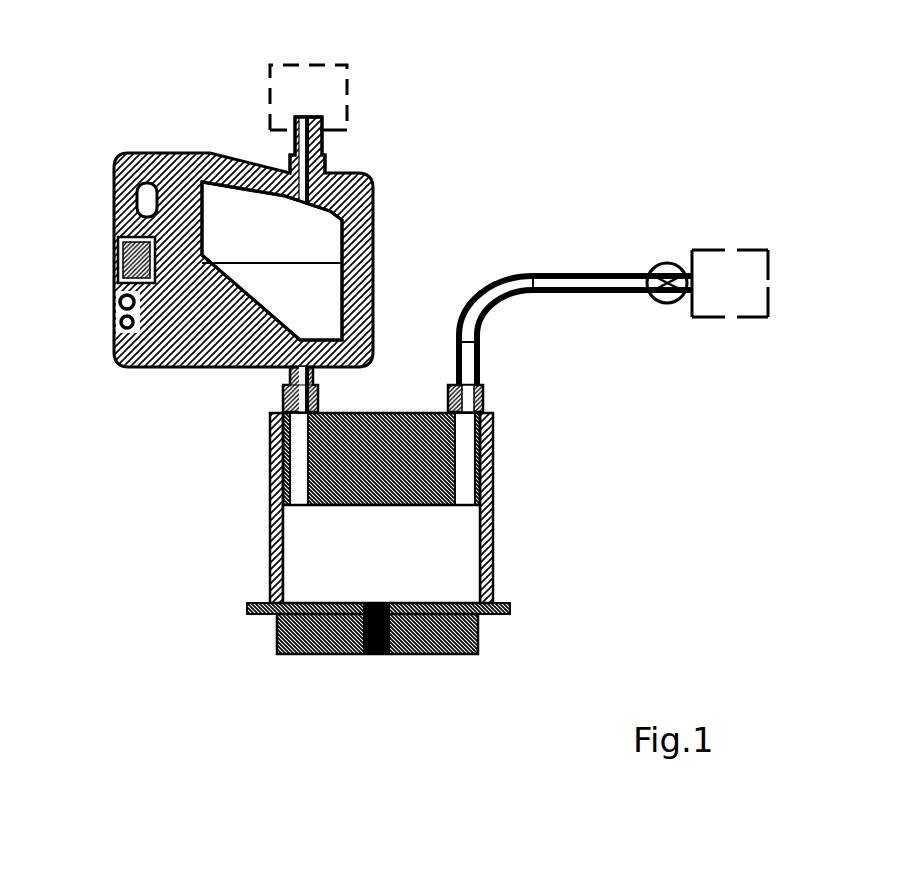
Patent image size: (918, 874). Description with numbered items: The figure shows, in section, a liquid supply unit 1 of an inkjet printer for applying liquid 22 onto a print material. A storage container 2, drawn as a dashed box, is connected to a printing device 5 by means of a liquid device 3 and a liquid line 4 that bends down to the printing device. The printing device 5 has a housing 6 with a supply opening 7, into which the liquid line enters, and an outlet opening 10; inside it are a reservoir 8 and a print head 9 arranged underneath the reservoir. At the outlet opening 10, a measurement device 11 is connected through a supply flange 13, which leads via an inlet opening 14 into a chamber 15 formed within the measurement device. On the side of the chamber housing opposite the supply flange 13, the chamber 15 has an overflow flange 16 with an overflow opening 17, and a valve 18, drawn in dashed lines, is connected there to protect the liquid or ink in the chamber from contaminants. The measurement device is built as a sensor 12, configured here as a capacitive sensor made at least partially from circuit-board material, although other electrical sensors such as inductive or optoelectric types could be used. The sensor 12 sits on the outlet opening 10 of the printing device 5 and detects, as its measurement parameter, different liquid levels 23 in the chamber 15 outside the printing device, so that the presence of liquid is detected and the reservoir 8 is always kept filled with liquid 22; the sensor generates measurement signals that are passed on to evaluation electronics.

The liquid supply unit 1 is at (603, 136).
The storage container 2 is at (733, 262).
The liquid device 3 is at (665, 265).
The liquid line 4 is at (533, 273).
The printing device 5 is at (417, 473).
The housing 6 is at (492, 567).
The supply opening 7 is at (468, 392).
The reservoir 8 is at (303, 550).
The print head 9 is at (332, 655).
The outlet opening 10 is at (297, 450).
The measurement device 11 is at (130, 152).
The sensor 12 is at (113, 353).
The supply flange 13 is at (285, 377).
The inlet opening 14 is at (320, 402).
The chamber 15 is at (228, 207).
The overflow flange 16 is at (323, 133).
The overflow opening 17 is at (312, 113).
The valve 18 is at (307, 80).
The liquid 22 is at (305, 305).
The liquid levels 23 is at (283, 259).